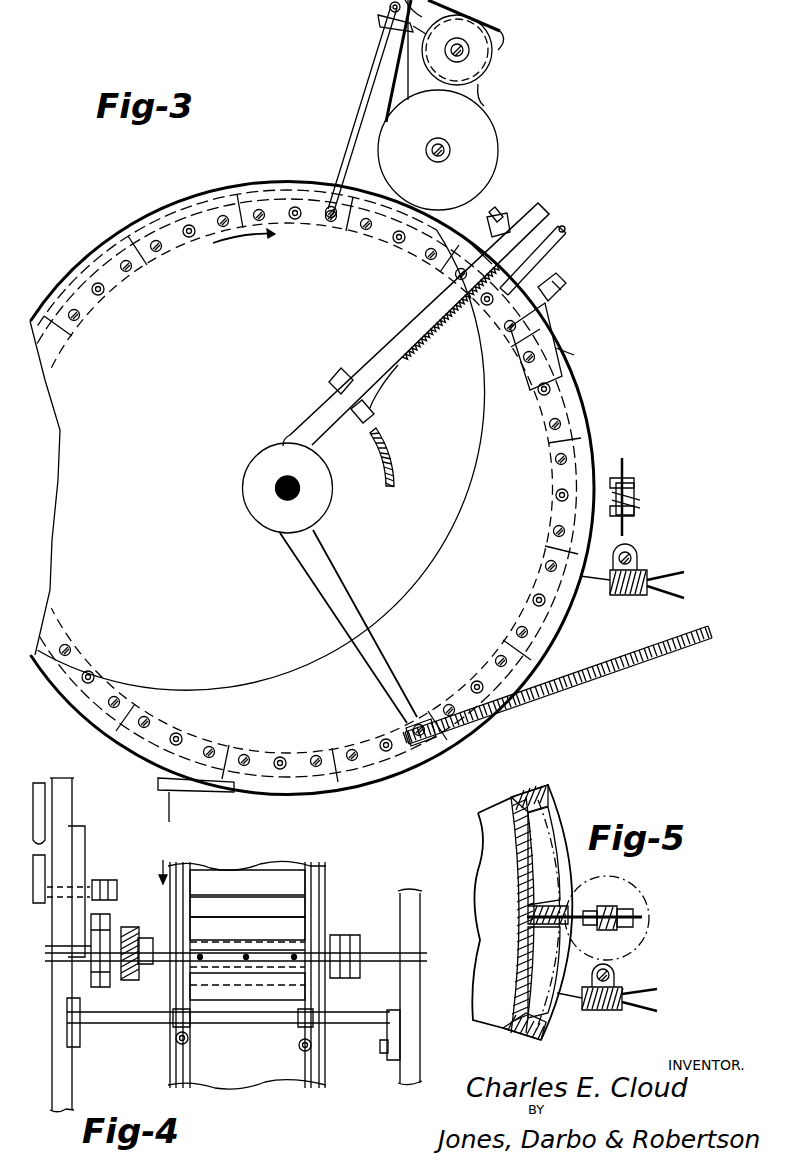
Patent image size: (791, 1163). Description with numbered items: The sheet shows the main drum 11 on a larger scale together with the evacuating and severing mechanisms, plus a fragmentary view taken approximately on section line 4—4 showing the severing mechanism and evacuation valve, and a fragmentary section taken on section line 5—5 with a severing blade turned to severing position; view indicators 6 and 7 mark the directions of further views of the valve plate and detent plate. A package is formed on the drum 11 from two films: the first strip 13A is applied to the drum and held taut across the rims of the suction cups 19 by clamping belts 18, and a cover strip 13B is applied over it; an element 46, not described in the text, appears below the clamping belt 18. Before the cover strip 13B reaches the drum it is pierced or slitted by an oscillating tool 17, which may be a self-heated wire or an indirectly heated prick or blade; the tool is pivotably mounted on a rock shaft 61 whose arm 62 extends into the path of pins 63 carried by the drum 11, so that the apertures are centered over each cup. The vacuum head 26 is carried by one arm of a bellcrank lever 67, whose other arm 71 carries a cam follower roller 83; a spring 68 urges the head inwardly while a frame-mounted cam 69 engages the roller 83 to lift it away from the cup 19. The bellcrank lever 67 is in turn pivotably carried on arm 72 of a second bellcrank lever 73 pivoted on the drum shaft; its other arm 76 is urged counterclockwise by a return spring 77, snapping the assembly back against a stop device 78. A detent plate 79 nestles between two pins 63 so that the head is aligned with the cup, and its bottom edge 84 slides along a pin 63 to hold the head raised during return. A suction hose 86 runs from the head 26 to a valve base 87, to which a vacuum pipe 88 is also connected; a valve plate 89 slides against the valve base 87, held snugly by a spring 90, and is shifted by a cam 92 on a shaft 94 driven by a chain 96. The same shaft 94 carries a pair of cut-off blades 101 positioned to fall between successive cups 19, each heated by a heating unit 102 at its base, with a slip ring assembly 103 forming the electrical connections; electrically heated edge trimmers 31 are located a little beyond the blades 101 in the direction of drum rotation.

In FIG. 3, the main drum 11 is at (166, 199).
In FIG. 3, the first film strip 13A is at (200, 186).
In FIG. 3, the cover strip 13B is at (494, 38).
In FIG. 3, the oscillating tool 17 is at (421, 33).
In FIG. 3, the clamping belts 18 is at (203, 795).
In FIG. 3, the suction cups 19 is at (172, 238).
In FIG. 4, the suction cups 19 is at (263, 917).
In FIG. 5, the suction cups 19 is at (526, 877).
In FIG. 3, the vacuum head 26 is at (545, 312).
In FIG. 3, the edge trimmers 31 is at (588, 580).
In FIG. 4, the edge trimmers 31 is at (175, 1040).
In FIG. 5, the edge trimmers 31 is at (565, 1000).
In FIG. 3, the support post 46 is at (172, 814).
In FIG. 3, the rock shaft 61 is at (388, 9).
In FIG. 3, the arm 62 is at (352, 118).
In FIG. 3, the pins 63 is at (298, 220).
In FIG. 3, the bellcrank lever 67 is at (548, 228).
In FIG. 3, the spring 68 is at (422, 352).
In FIG. 3, the cam 69 is at (396, 470).
In FIG. 3, the arm 71 is at (392, 372).
In FIG. 3, the arm 72 is at (529, 209).
In FIG. 3, the second bellcrank lever 73 is at (272, 462).
In FIG. 3, the arm 76 is at (366, 630).
In FIG. 3, the return spring 77 is at (560, 690).
In FIG. 3, the stop device 78 is at (334, 381).
In FIG. 3, the detent plate 79 is at (566, 358).
In FIG. 3, the cam follower roller 83 is at (375, 413).
In FIG. 3, the bottom edge 84 is at (516, 349).
In FIG. 4, the suction hose 86 is at (44, 766).
In FIG. 4, the valve base 87 is at (68, 792).
In FIG. 4, the vacuum pipe 88 is at (40, 905).
In FIG. 4, the valve plate 89 is at (80, 845).
In FIG. 4, the spring 90 is at (112, 870).
In FIG. 4, the cam 92 is at (96, 972).
In FIG. 3, the shaft 94 is at (622, 503).
In FIG. 4, the shaft 94 is at (155, 945).
In FIG. 5, the shaft 94 is at (616, 926).
In FIG. 4, the chain 96 is at (143, 906).
In FIG. 3, the cut-off blades 101 is at (625, 473).
In FIG. 4, the cut-off blades 101 is at (296, 926).
In FIG. 5, the cut-off blades 101 is at (640, 919).
In FIG. 3, the heating unit 102 is at (626, 490).
In FIG. 5, the heating unit 102 is at (612, 910).
In FIG. 4, the slip ring assembly 103 is at (346, 936).
In FIG. 3, the section line 4— 4 is at (692, 433).
In FIG. 4, the section line 5— 5 is at (215, 852).
In FIG. 4, the section line 6 is at (107, 810).
In FIG. 3, the section line 7 is at (587, 283).